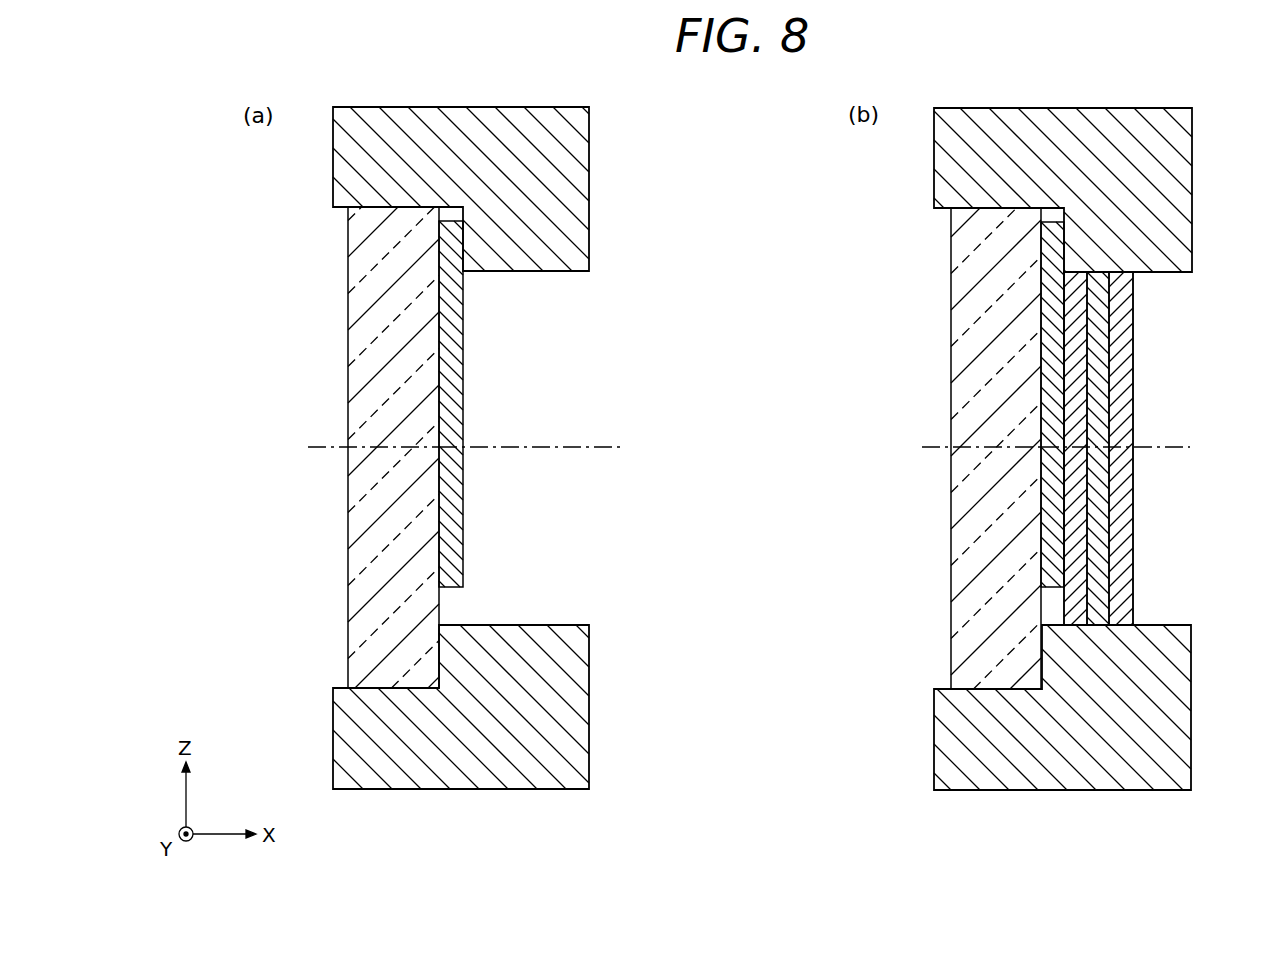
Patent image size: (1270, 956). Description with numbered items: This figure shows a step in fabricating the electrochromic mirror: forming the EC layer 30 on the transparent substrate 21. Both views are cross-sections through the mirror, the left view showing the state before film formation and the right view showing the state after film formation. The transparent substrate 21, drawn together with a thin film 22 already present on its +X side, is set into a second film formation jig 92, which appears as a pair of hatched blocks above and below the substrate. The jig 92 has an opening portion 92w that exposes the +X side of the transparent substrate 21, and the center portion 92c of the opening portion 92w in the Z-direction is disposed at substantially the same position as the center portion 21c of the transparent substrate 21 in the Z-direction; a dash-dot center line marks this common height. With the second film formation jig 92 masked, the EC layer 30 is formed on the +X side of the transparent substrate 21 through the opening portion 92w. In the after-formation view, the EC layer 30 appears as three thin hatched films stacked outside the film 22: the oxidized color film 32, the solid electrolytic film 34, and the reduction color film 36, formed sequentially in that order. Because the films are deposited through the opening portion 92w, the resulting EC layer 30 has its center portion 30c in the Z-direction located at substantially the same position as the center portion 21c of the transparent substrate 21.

The transparent substrate 21 is at (355, 320).
The center portion of the transparent substrate 21c is at (335, 447).
The intermediate layer 22 is at (455, 345).
The EC layer 30 is at (1210, 497).
The center portion of the EC layer 30c is at (1178, 447).
The oxidized color film 32 is at (1075, 517).
The solid electrolytic film 34 is at (1098, 550).
The reduction color film 36 is at (1123, 582).
The second film formation jig 92 is at (584, 214).
The opening portion 92w is at (578, 271).
The center portion of the opening portion 92c is at (578, 447).